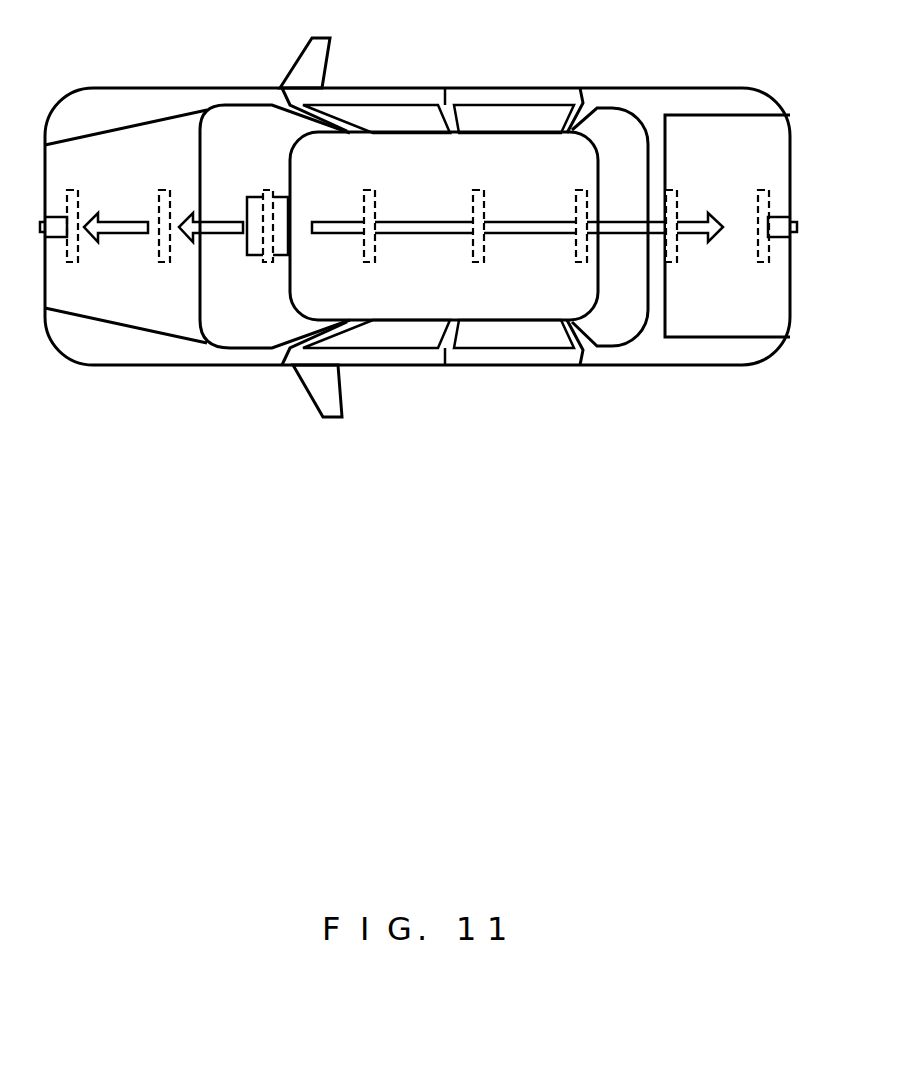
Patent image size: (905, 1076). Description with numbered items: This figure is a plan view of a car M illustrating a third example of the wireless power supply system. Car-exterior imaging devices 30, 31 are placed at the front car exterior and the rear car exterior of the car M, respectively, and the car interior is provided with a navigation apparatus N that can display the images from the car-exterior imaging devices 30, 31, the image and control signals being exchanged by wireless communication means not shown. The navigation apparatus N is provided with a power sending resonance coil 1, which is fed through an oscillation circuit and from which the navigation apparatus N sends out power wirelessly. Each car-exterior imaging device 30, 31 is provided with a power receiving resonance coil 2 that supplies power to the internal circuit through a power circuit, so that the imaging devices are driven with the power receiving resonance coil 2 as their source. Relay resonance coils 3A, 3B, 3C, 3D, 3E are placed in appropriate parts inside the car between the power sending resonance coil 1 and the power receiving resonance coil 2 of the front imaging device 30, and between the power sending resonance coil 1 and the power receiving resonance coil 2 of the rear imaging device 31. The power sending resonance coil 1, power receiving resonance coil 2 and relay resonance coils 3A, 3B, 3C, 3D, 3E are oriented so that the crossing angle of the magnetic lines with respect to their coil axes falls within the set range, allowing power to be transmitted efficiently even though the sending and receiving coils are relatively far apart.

The car M is at (398, 88).
The navigation apparatus N is at (257, 255).
The power sending resonance coil 1 is at (268, 188).
The power receiving resonance coil 2 is at (72, 188).
The relay resonance coil 3A is at (165, 263).
The relay resonance coil 3B is at (369, 263).
The relay resonance coil 3C is at (478, 263).
The relay resonance coil 3D is at (581, 263).
The relay resonance coil 3E is at (671, 263).
The car-exterior imaging device 30 is at (54, 235).
The car-exterior imaging device 31 is at (780, 220).